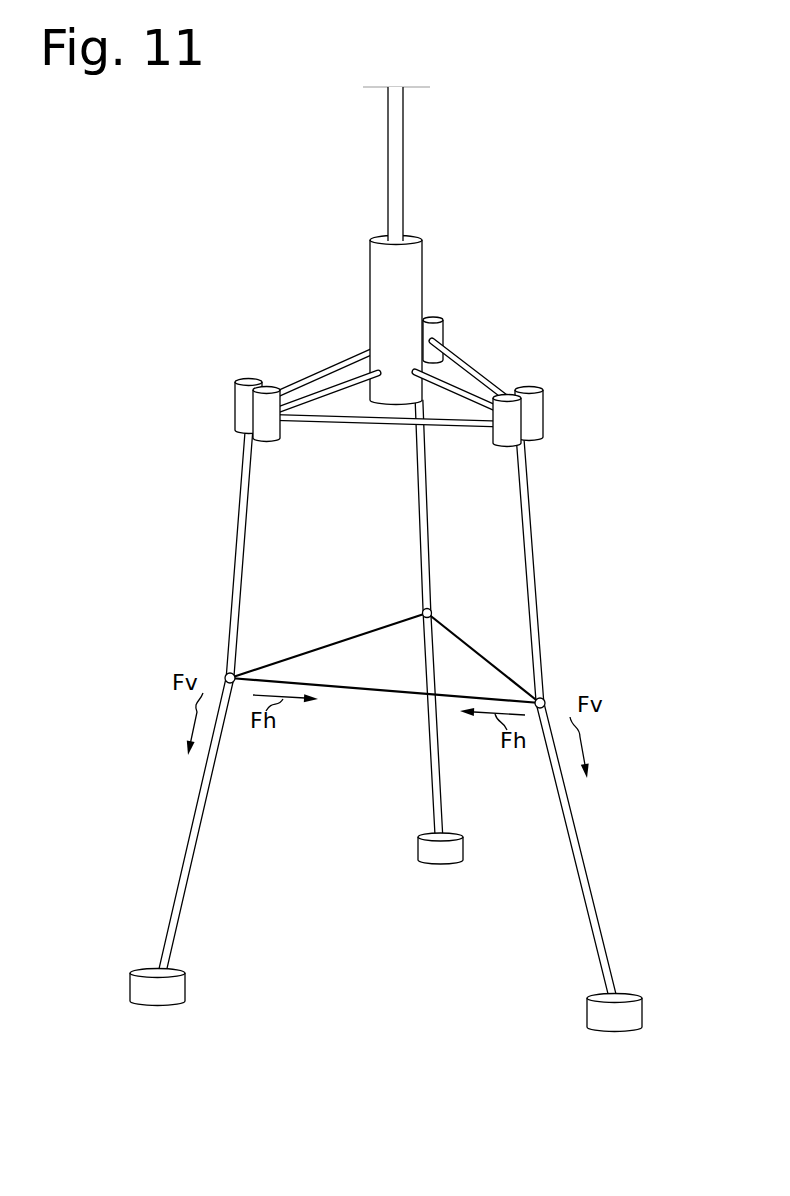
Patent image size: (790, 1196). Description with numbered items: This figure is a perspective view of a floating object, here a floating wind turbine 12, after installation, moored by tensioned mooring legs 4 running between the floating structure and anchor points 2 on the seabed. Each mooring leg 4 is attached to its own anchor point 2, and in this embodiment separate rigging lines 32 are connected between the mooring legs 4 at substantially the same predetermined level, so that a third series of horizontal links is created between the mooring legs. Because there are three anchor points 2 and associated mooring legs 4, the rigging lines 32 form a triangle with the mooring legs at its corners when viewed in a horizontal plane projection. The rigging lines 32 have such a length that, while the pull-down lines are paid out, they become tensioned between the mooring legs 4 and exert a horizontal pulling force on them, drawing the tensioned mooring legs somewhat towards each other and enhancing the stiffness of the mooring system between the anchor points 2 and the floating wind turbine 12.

The floating wind turbine 12 is at (527, 186).
The mooring legs 4 is at (532, 590).
The rigging lines 32 is at (358, 632).
The anchor points 2 is at (178, 992).